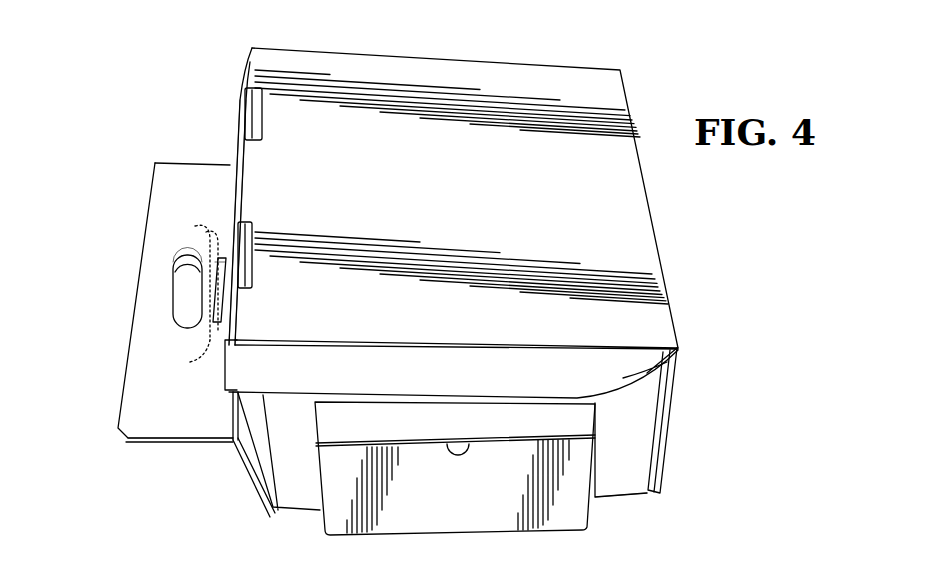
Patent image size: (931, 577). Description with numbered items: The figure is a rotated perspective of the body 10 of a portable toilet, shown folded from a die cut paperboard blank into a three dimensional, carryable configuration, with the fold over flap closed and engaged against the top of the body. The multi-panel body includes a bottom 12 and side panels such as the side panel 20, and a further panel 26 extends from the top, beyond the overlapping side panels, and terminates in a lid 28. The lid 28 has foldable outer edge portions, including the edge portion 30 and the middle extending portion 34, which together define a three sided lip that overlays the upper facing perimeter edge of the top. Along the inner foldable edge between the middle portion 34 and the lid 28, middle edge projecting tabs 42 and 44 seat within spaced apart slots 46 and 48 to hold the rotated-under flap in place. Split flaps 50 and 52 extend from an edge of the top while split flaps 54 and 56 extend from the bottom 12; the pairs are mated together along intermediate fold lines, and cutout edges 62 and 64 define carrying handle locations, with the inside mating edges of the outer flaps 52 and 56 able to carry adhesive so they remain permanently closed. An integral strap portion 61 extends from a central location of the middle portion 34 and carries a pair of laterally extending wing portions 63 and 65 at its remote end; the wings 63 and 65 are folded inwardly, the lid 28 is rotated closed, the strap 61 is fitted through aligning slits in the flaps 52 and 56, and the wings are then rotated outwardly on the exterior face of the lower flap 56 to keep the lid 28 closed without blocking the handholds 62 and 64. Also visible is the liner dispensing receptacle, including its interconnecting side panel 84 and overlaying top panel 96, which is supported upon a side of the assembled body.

The body 10 is at (105, 88).
The bottom 12 is at (613, 500).
The side panel 20 is at (285, 457).
The further panel 26 is at (673, 410).
The lid 28 is at (444, 204).
The foldable outer edge portion 30 is at (473, 383).
The middle extending portion 34 is at (237, 168).
The projecting tab 42 is at (262, 113).
The projecting tab 44 is at (254, 250).
The slot 46 is at (247, 115).
The slot 48 is at (243, 230).
The split flap 50 is at (237, 420).
The split flap 52 is at (140, 408).
The split flap 54 is at (247, 473).
The split flap 56 is at (150, 445).
The strap portion 61 is at (240, 233).
The cutout edge 62 is at (172, 262).
The wing portion 63 is at (195, 226).
The cutout edge 64 is at (186, 266).
The wing portion 65 is at (190, 362).
The side panel 84 is at (452, 504).
The top panel 96 is at (427, 430).